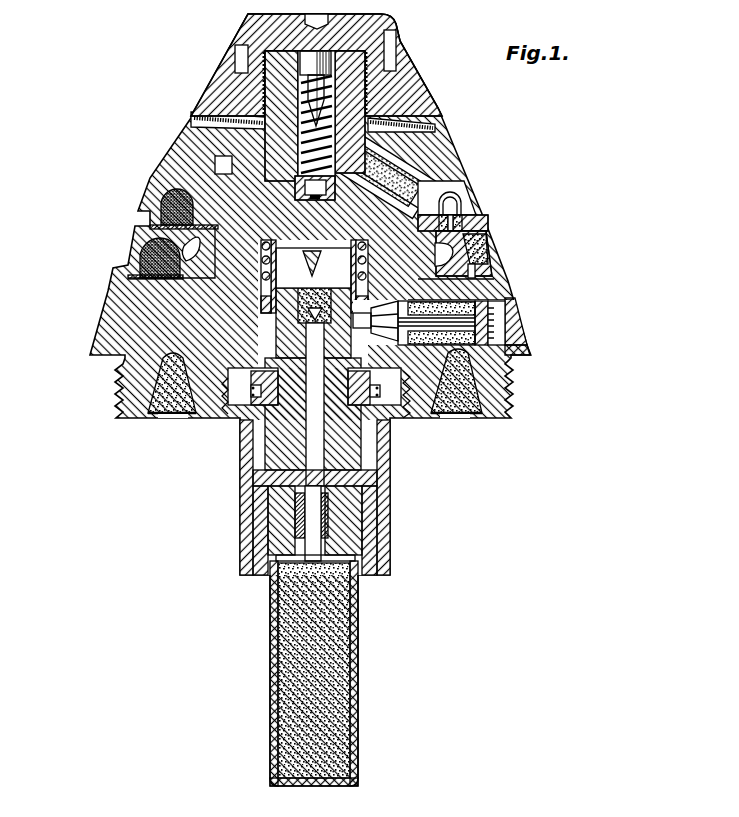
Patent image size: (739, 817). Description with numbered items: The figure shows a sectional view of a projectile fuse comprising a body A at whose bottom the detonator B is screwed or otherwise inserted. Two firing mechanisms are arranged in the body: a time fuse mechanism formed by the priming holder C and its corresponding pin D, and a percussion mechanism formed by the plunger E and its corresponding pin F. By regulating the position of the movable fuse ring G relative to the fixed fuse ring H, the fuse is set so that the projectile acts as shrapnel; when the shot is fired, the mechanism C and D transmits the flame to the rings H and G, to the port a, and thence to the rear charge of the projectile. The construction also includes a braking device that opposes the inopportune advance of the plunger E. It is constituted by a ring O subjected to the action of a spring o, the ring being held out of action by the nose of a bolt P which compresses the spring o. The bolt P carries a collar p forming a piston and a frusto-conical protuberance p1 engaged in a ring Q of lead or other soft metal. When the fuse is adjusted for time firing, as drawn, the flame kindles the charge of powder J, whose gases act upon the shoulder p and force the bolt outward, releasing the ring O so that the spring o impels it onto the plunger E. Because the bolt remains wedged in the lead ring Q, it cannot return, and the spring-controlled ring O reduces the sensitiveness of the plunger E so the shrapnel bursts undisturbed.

The body A is at (128, 378).
The port a is at (158, 407).
The detonator B is at (348, 653).
The priming holder C is at (287, 173).
The pin D is at (312, 78).
The plunger E is at (272, 436).
The pin F is at (358, 240).
The movable fuse ring G is at (121, 227).
The fixed fuse ring H is at (190, 133).
The charge of powder J is at (486, 292).
The spring o is at (253, 272).
The ring O is at (253, 281).
The bolt P is at (500, 324).
The collar p is at (500, 296).
The frusto-conical protuberance p1 is at (512, 347).
The ring of lead Q is at (388, 318).